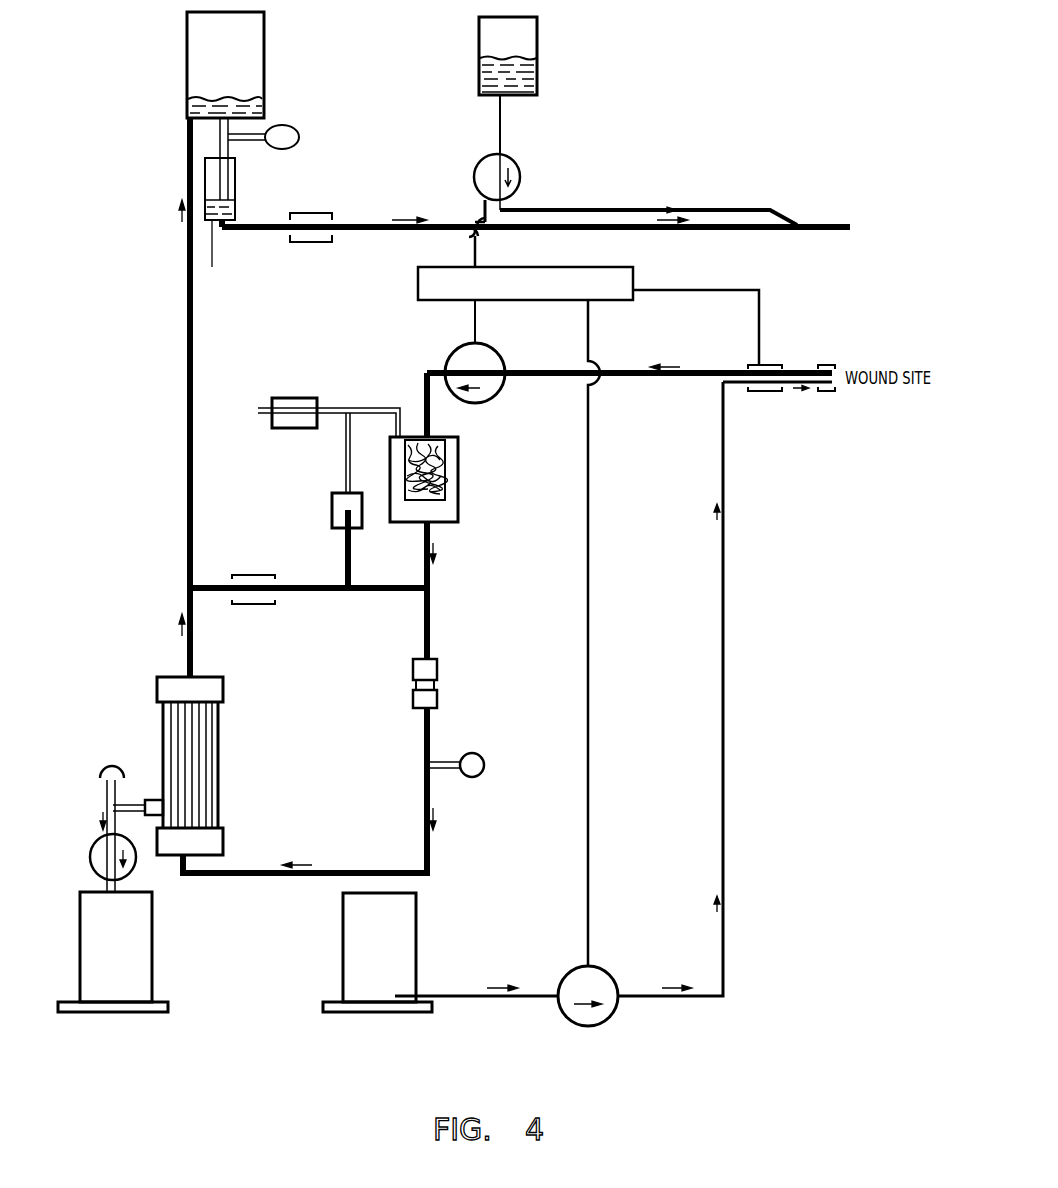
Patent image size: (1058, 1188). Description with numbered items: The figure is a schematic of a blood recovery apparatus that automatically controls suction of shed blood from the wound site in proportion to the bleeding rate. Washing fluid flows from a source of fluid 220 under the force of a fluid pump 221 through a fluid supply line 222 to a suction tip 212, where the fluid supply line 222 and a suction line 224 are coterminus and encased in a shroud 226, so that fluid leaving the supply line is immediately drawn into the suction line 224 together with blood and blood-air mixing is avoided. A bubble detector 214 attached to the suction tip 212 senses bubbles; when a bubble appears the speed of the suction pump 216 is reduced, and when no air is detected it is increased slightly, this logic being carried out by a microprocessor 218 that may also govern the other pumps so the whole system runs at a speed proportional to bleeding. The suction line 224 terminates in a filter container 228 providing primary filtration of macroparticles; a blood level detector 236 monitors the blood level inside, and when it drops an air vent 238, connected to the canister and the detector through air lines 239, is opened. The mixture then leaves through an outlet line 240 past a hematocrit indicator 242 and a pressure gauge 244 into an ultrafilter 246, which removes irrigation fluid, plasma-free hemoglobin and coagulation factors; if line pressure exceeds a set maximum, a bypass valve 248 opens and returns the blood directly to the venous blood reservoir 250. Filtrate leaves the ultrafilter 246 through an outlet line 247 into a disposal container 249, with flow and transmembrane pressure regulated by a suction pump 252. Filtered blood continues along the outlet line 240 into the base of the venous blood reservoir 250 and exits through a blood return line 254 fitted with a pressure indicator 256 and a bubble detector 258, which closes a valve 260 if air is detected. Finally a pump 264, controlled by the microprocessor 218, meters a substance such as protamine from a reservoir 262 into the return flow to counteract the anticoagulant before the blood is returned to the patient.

The suction tip 212 is at (828, 392).
The bubble detector 214 is at (752, 362).
The suction pump 216 is at (498, 347).
The microprocessor 218 is at (418, 283).
The source of fluid 220 is at (417, 942).
The fluid pump 221 is at (602, 1022).
The fluid supply line 222 is at (728, 890).
The suction line 224 is at (623, 377).
The shroud 226 is at (828, 365).
The filter container 228 is at (445, 462).
The blood level detector 236 is at (332, 520).
The air vent 238 is at (296, 398).
The air lines 239 is at (360, 408).
The outlet line 240 is at (187, 470).
The hematocrit indicator 242 is at (438, 674).
The pressure gauge 244 is at (561, 633).
The ultrafilter 246 is at (218, 777).
The outlet line 247 is at (106, 804).
The bypass valve 248 is at (262, 606).
The disposal container 249 is at (80, 925).
The venous blood reservoir 250 is at (266, 48).
The suction pump 252 is at (90, 857).
The blood return line 254 is at (762, 230).
The pressure indicator 256 is at (298, 130).
The bubble detector 258 is at (237, 183).
The valve 260 is at (312, 212).
The reservoir 262 is at (539, 43).
The pump 264 is at (520, 172).